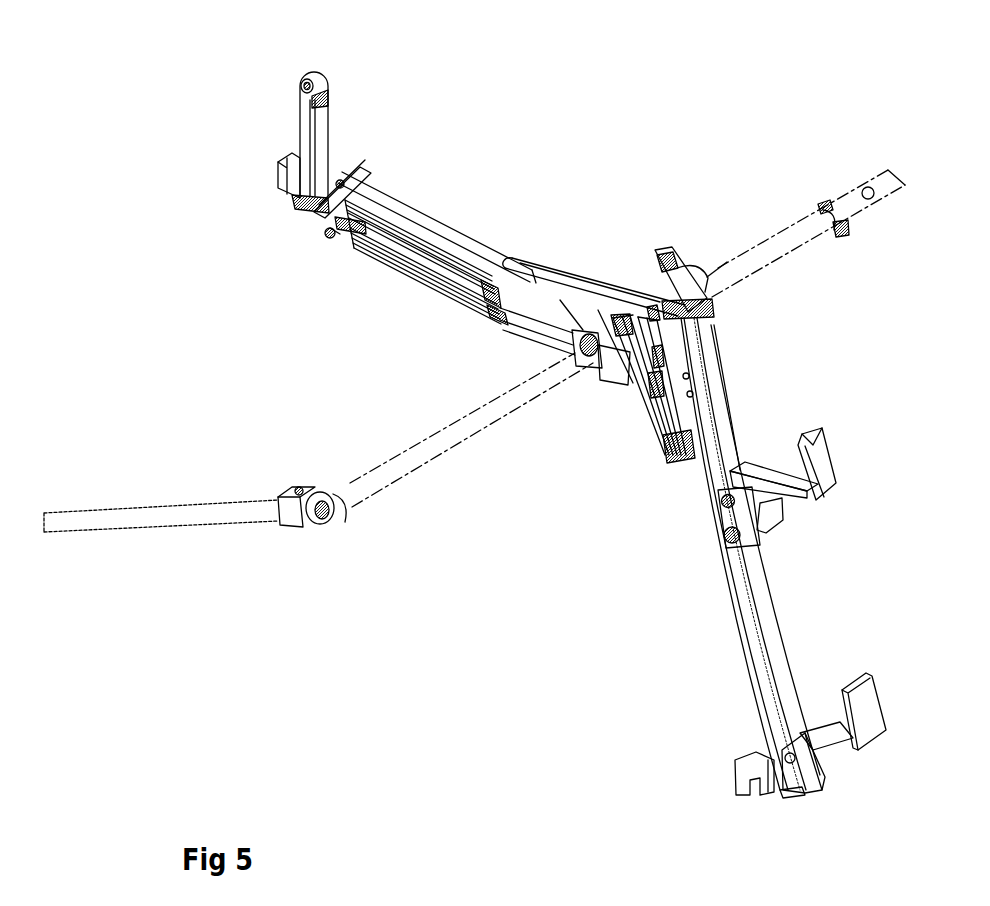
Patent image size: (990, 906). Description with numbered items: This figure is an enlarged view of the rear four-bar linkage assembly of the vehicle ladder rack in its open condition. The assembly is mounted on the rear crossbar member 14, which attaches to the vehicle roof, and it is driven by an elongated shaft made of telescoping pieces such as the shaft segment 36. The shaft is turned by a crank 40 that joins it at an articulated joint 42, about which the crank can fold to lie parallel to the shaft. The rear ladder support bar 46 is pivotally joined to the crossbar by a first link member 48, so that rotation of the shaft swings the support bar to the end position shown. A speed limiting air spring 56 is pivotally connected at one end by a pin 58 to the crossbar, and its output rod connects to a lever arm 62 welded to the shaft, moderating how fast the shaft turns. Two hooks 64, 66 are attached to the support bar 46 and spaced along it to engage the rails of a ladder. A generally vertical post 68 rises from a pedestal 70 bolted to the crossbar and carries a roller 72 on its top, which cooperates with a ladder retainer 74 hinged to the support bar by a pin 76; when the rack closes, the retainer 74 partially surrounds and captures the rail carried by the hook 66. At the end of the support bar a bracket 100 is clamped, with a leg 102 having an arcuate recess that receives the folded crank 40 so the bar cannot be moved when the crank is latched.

The rear crossbar member 14 is at (401, 208).
The shaft segment 36 is at (763, 245).
The crank 40 is at (110, 533).
The articulated joint 42 is at (297, 530).
The rear ladder support bar 46 is at (743, 647).
The first link member 48 is at (560, 270).
The speed limiting air spring 56 is at (397, 280).
The pin 58 is at (328, 234).
The lever arm 62 is at (577, 362).
The hook 64 is at (883, 695).
The hook 66 is at (836, 463).
The post 68 is at (330, 121).
The pedestal 70 is at (362, 178).
The roller 72 is at (306, 70).
The ladder retainer 74 is at (655, 423).
The pin 76 is at (672, 457).
The bracket 100 is at (775, 790).
The leg 102 is at (737, 758).